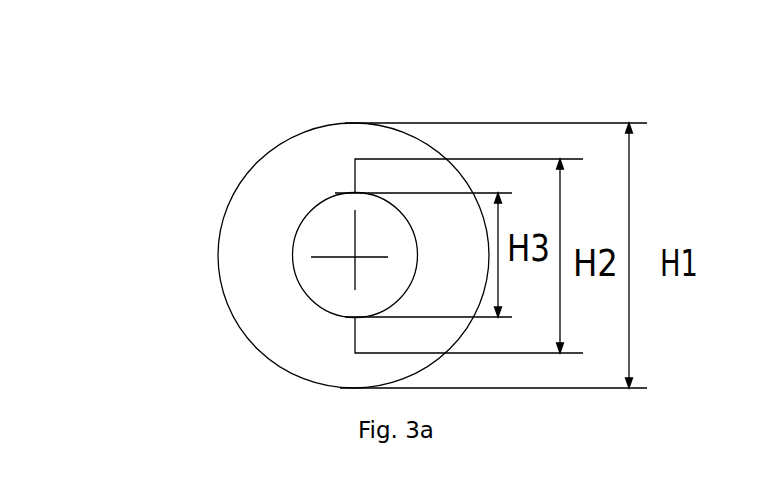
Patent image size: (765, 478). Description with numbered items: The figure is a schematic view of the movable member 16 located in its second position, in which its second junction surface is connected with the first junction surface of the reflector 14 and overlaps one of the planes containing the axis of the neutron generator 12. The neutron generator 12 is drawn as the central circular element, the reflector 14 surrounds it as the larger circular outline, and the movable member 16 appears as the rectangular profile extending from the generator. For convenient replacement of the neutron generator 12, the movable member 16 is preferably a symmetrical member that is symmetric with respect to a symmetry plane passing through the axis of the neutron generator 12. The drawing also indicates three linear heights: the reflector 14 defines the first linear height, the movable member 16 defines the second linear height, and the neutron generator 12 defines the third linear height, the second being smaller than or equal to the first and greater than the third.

The neutron generator 12 is at (322, 205).
The reflector 14 is at (263, 240).
The movable member 16 is at (400, 165).